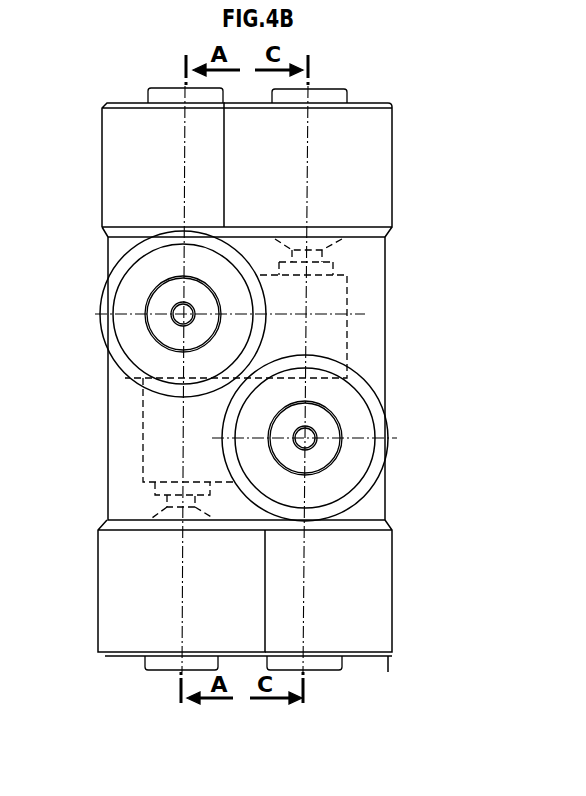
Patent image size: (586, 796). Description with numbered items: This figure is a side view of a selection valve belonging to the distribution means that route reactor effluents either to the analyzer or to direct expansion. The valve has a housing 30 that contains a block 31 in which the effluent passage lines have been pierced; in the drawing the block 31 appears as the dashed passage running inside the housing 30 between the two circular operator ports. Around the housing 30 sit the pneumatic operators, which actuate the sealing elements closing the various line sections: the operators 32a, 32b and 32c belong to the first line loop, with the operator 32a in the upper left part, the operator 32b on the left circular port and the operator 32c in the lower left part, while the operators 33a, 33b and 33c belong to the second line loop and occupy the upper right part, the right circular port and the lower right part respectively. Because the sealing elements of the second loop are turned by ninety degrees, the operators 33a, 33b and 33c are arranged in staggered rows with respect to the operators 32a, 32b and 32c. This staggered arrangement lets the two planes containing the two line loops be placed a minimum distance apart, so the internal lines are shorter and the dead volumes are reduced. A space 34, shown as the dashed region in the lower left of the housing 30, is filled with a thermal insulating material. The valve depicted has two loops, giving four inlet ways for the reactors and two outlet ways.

The housing 30 is at (383, 273).
The block 31 is at (347, 346).
The pneumatic operator 32a is at (123, 121).
The pneumatic operator 32b is at (132, 288).
The pneumatic operator 32c is at (123, 550).
The pneumatic operator 33a is at (370, 130).
The pneumatic operator 33b is at (363, 458).
The pneumatic operator 33c is at (362, 622).
The space 34 is at (128, 418).